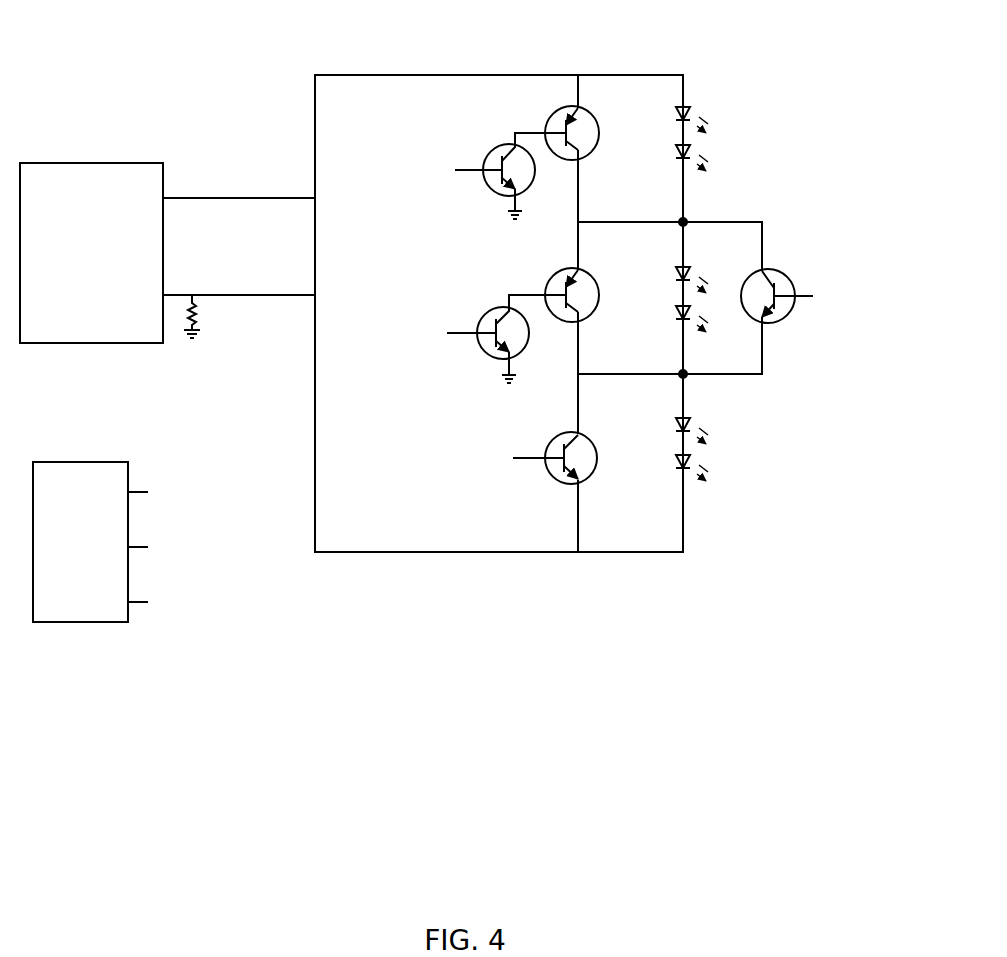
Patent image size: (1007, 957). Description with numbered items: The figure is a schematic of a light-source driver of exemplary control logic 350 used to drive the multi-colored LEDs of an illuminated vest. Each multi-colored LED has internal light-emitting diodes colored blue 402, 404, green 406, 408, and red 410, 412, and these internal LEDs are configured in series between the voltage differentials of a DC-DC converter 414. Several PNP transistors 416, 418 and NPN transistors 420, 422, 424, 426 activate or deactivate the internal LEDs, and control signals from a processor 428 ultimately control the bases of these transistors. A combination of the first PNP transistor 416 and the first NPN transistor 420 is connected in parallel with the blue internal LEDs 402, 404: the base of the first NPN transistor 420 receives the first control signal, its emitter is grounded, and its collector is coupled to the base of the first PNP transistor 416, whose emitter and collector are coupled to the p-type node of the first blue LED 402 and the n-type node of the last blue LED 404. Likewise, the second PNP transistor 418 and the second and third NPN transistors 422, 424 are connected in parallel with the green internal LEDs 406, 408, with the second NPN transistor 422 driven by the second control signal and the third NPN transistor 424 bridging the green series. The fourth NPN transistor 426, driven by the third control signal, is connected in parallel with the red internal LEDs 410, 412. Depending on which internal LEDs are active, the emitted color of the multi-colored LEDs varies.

The control logic 350 is at (200, 51).
The first blue internal LED 402 is at (688, 106).
The blue internal LED 404 is at (690, 147).
The first green internal LED 406 is at (688, 267).
The green internal LED 408 is at (677, 307).
The first red internal LED 410 is at (688, 419).
The red internal LED 412 is at (690, 457).
The DC-DC converter 414 is at (72, 330).
The first PNP transistor 416 is at (546, 124).
The second PNP transistor 418 is at (546, 287).
The first NPN transistor 420 is at (487, 182).
The second NPN transistor 422 is at (482, 346).
The third NPN transistor 424 is at (790, 280).
The fourth NPN transistor 426 is at (548, 472).
The processor 428 is at (85, 612).